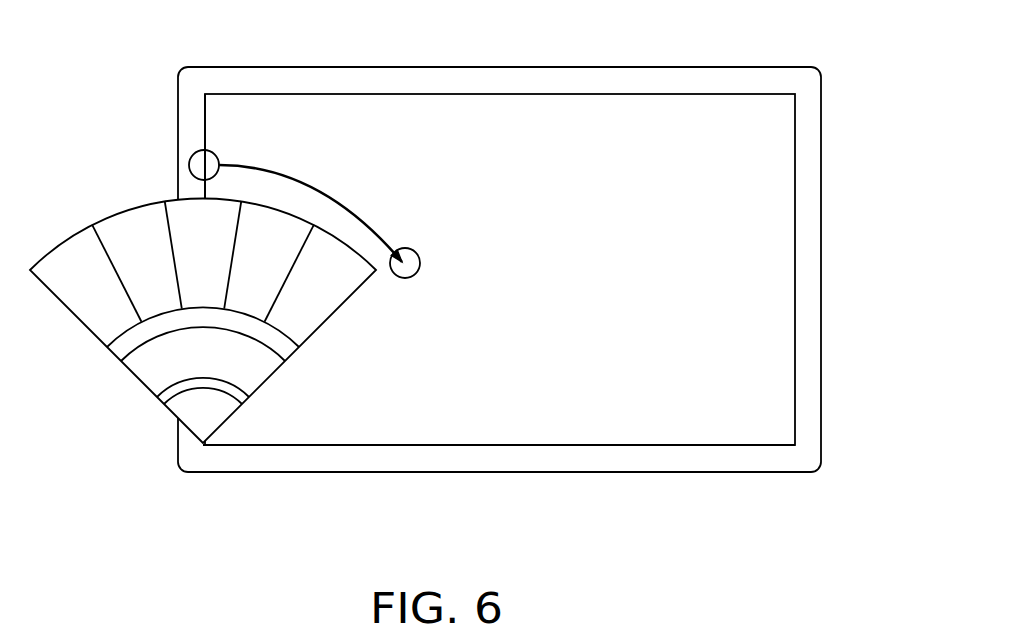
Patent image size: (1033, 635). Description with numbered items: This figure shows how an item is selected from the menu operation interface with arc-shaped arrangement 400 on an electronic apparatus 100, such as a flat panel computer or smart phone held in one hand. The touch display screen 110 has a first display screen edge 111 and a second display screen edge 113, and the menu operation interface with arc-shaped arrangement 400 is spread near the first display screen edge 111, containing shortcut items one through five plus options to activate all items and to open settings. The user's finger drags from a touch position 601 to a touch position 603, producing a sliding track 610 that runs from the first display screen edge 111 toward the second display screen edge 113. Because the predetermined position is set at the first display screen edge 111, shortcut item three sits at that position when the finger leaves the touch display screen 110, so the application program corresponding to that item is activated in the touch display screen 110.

The electronic apparatus 100 is at (695, 68).
The touch display screen 110 is at (623, 113).
The first display screen edge 111 is at (205, 118).
The second display screen edge 113 is at (362, 445).
The menu operation interface with arc-shaped arrangement 400 is at (345, 345).
The touch position 601 is at (190, 165).
The touch position 603 is at (415, 263).
The sliding track 610 is at (330, 183).